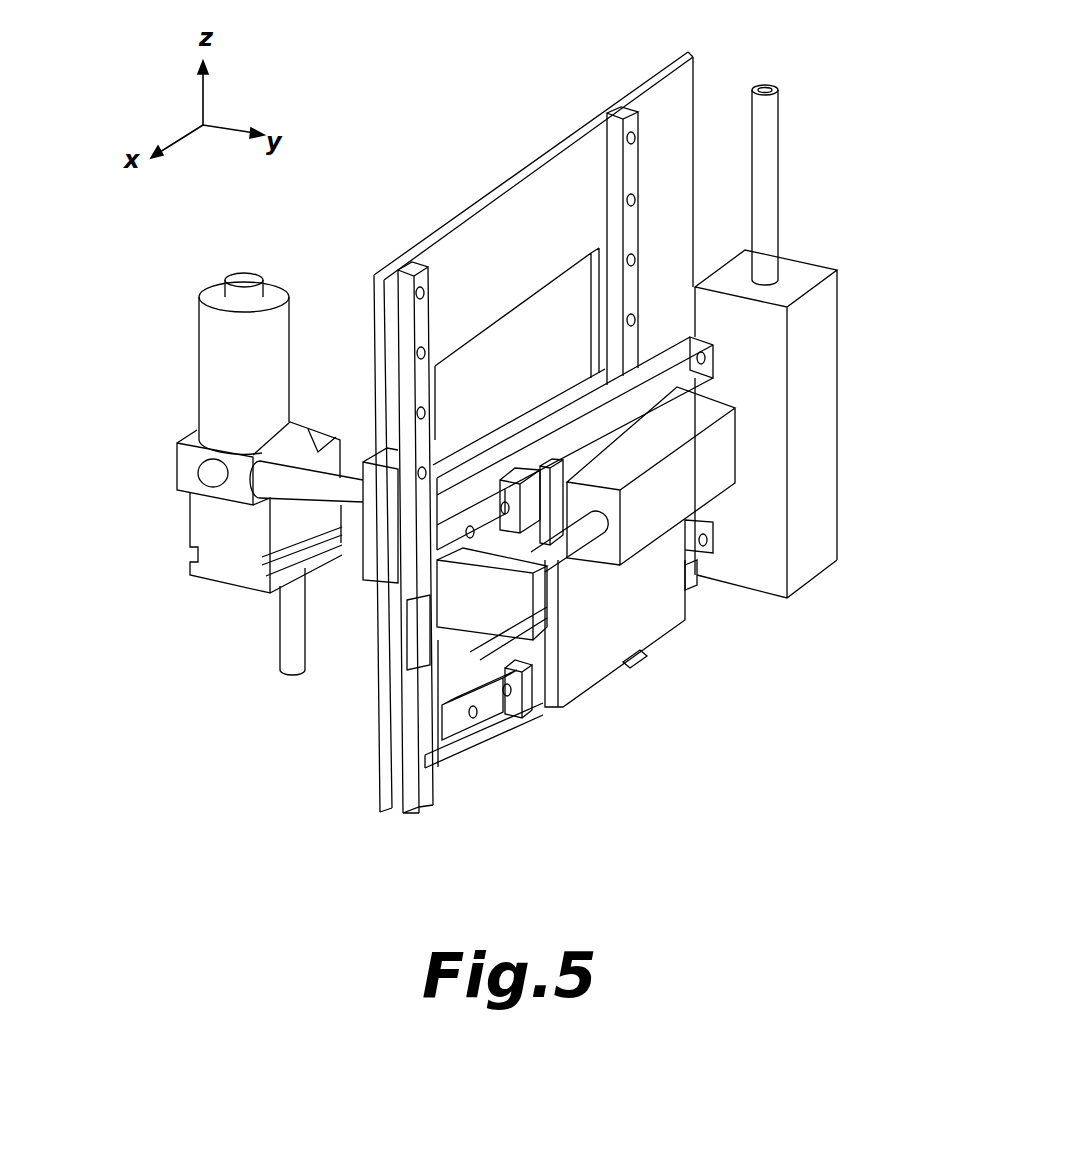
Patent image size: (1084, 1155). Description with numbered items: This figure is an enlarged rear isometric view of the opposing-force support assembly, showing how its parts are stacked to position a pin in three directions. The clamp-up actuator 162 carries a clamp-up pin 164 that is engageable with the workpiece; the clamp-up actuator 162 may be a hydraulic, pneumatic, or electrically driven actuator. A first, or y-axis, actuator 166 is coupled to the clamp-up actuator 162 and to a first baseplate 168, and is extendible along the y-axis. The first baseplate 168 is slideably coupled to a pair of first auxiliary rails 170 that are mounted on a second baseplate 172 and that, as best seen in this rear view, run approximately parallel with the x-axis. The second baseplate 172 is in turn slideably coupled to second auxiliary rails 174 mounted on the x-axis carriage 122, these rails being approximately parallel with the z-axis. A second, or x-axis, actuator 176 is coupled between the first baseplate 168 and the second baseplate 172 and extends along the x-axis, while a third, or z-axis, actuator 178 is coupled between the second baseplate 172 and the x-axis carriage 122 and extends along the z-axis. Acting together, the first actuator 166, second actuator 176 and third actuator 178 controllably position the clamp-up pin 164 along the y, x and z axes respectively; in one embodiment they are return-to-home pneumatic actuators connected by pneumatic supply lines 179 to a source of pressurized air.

The x-axis carriage 122 is at (648, 78).
The clamp-up actuator 162 is at (177, 470).
The clamp-up pin 164 is at (290, 630).
The first actuator 166 is at (443, 433).
The first baseplate 168 is at (607, 667).
The first auxiliary rails 170 is at (443, 722).
The second baseplate 172 is at (580, 383).
The second auxiliary rails 174 is at (410, 263).
The second actuator 176 is at (648, 528).
The third actuator 178 is at (838, 300).
The pneumatic supply lines 179 is at (767, 132).